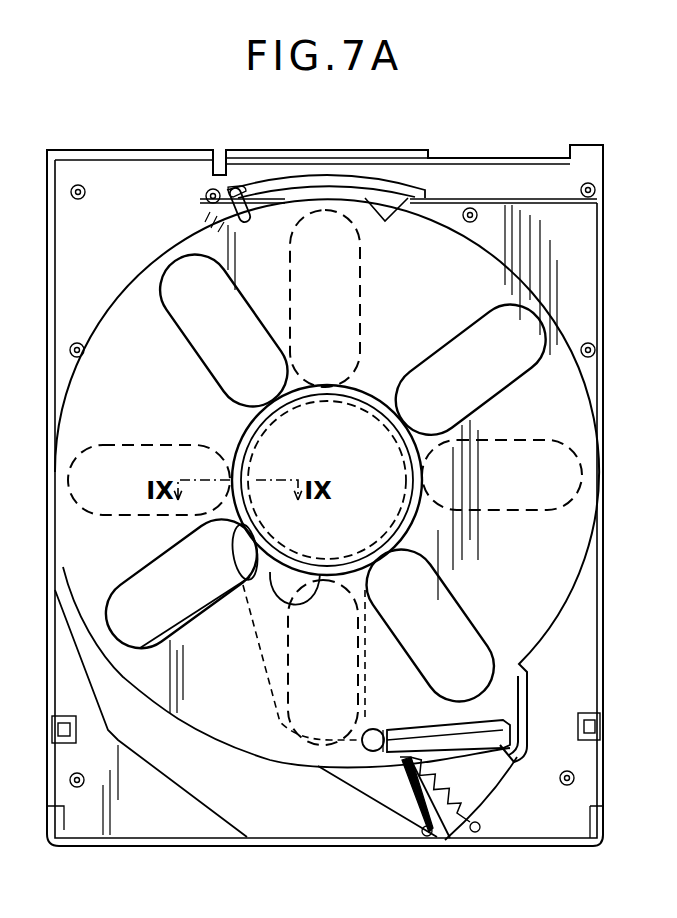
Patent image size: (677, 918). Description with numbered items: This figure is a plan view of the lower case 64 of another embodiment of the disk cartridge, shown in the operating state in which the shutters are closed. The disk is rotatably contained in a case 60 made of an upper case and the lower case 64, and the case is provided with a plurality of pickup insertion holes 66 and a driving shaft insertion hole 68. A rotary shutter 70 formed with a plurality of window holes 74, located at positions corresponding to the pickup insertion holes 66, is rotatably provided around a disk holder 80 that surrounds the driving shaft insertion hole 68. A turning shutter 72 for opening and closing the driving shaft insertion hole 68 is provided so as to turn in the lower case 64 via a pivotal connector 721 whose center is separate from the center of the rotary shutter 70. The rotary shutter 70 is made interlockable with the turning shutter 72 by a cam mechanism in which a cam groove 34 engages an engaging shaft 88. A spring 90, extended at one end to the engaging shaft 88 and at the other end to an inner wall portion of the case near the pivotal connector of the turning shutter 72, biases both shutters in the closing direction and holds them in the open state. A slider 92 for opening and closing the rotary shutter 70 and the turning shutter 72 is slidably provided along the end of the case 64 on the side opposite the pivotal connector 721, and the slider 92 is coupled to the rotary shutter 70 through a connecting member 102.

The case 60 is at (606, 137).
The lower case 64 is at (188, 828).
The slider 92 is at (408, 147).
The connecting member 102 is at (252, 193).
The rotary shutter 70 is at (125, 313).
The window holes 74 is at (172, 276).
The pickup insertion holes 66 is at (360, 276).
The driving shaft insertion hole 68 is at (348, 416).
The disk holder 80 is at (240, 432).
The turning shutter 72 is at (267, 684).
The pivotal connector 721 is at (422, 838).
The engaging shaft 88 is at (362, 752).
The cam groove 34 is at (509, 758).
The spring 90 is at (458, 834).